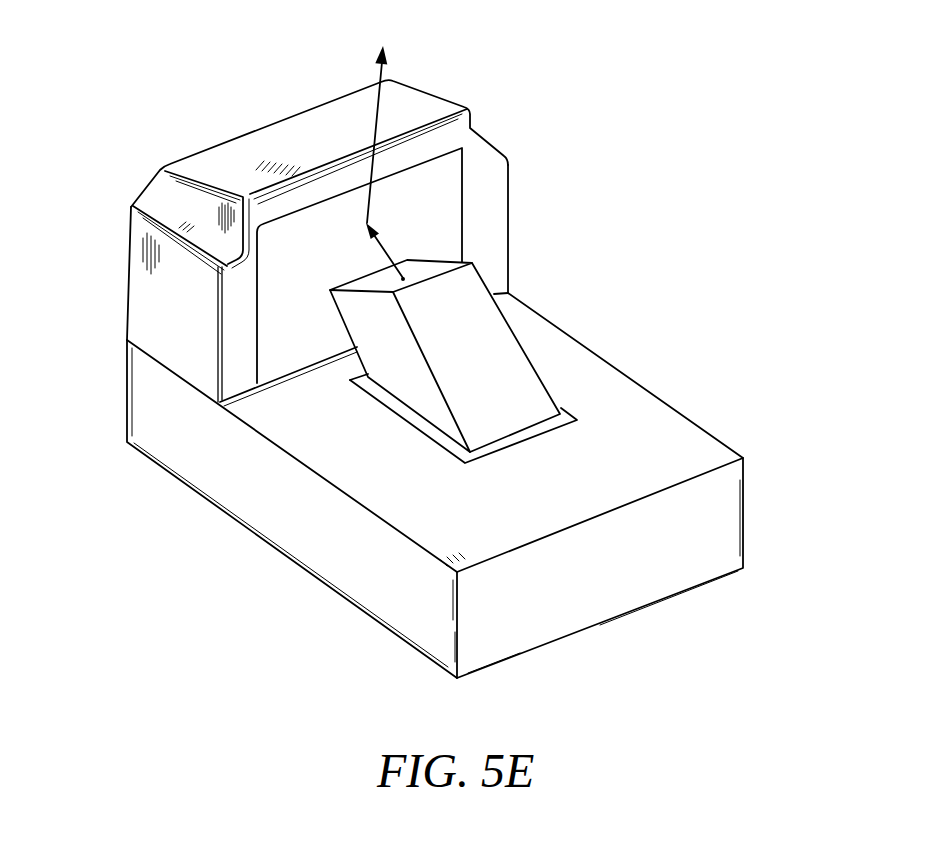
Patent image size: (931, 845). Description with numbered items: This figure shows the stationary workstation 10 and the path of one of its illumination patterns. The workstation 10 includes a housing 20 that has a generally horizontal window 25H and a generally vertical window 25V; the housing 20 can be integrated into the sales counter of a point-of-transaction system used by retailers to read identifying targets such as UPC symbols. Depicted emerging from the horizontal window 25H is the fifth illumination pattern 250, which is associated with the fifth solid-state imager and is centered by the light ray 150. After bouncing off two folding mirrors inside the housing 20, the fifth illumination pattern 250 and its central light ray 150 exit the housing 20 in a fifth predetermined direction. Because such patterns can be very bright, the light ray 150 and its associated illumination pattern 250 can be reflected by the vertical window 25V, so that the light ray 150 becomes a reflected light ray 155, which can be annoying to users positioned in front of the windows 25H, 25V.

The workstation 10 is at (207, 73).
The housing 20 is at (195, 167).
The generally vertical window 25V is at (275, 308).
The generally horizontal window 25H is at (568, 418).
The light ray 150 is at (385, 248).
The light ray 155 is at (378, 102).
The fifth illumination pattern 250 is at (470, 347).